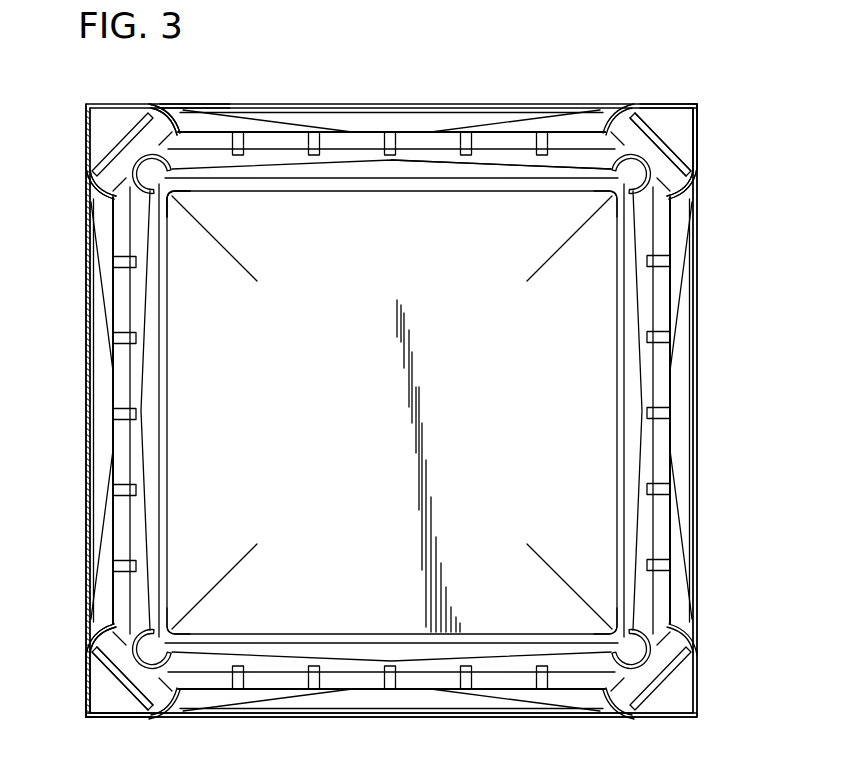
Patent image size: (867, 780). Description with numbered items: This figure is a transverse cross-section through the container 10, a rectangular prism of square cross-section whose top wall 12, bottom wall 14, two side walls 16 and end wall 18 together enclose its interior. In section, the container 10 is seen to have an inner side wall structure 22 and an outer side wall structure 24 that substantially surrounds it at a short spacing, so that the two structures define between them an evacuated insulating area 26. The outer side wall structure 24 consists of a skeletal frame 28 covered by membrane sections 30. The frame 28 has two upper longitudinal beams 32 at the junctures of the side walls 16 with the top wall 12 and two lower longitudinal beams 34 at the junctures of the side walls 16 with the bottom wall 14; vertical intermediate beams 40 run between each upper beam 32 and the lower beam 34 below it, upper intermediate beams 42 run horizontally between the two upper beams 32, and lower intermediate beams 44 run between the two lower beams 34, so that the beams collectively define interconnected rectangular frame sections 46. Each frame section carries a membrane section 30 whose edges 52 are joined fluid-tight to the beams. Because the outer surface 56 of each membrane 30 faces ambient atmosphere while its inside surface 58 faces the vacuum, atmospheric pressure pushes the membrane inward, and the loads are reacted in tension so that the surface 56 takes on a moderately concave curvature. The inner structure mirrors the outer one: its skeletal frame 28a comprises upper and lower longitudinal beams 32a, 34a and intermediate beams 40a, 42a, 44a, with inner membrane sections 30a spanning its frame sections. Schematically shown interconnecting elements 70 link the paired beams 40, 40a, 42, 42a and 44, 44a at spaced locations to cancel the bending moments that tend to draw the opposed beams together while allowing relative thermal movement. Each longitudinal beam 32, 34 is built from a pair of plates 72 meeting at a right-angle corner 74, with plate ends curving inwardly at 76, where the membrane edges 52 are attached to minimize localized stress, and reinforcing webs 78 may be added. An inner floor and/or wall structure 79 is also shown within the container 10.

The container 10 is at (715, 300).
The top wall 12 is at (450, 106).
The bottom wall 14 is at (385, 722).
The side walls 16 is at (80, 350).
The end wall 18 is at (605, 397).
The inner side wall structure 22 is at (193, 197).
The outer side wall structure 24 is at (197, 98).
The evacuated insulating area 26 is at (365, 128).
The skeletal frame 28 is at (185, 106).
The inner skeletal frame 28a is at (193, 620).
The membrane sections 30 is at (535, 125).
The inner membrane sections 30a is at (424, 163).
The upper longitudinal beams 32 is at (133, 106).
The inner upper longitudinal beams 32a is at (170, 202).
The lower longitudinal beams 34 is at (90, 672).
The inner lower longitudinal beams 34a is at (175, 648).
The vertical intermediate beams 40 is at (105, 205).
The inner vertical intermediate beams 40a is at (110, 223).
The upper intermediate beams 42 is at (595, 122).
The inner upper intermediate beams 42a is at (563, 165).
The lower intermediate beams 44 is at (580, 700).
The inner lower intermediate beams 44a is at (565, 662).
The rectangular frame sections 46 is at (692, 245).
The membrane edges 52 is at (87, 172).
The outer surface of membrane 56 is at (280, 106).
The inside surface of membrane 58 is at (258, 106).
The interconnecting elements 70 is at (380, 163).
The plates 72 is at (678, 106).
The right angle corner 74 is at (697, 106).
The inward curve 76 is at (680, 205).
The reinforcing webs 78 is at (685, 152).
The inner floor and/or wall structure 79 is at (170, 368).